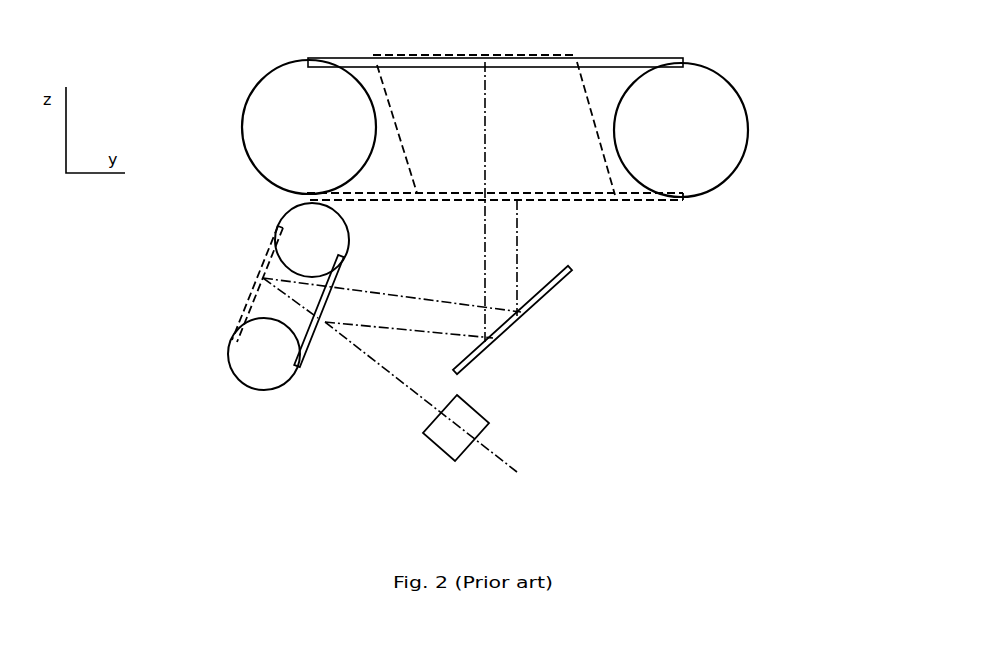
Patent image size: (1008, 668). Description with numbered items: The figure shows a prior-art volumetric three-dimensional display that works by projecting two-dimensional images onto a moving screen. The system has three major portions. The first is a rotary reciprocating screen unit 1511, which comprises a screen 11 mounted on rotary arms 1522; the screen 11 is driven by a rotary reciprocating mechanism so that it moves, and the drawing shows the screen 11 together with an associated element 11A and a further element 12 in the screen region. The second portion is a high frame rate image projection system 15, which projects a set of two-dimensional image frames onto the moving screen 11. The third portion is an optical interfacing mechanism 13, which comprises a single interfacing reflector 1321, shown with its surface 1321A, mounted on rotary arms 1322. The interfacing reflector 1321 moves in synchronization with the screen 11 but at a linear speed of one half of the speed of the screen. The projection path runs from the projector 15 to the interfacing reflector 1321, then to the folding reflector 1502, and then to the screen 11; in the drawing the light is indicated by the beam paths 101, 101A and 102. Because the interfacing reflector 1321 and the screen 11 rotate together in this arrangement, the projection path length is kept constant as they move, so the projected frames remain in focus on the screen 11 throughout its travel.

The screen 11 is at (668, 57).
The reflective plate 11A is at (648, 207).
The document 12 is at (587, 100).
The optical interfacing mechanism 13 is at (239, 351).
The high frame rate image projection system 15 is at (492, 413).
The light beam 101 is at (482, 242).
The reflected light beam 101A is at (517, 243).
The light beam to image sensor 102 is at (413, 402).
The interfacing reflector 1321 is at (308, 358).
The light emitting surface 1321A is at (245, 302).
The rotary arms 1322 is at (288, 217).
The folding reflector 1502 is at (557, 305).
The rotary reciprocating screen unit 1511 is at (520, 121).
The rotary arms 1522 is at (250, 123).